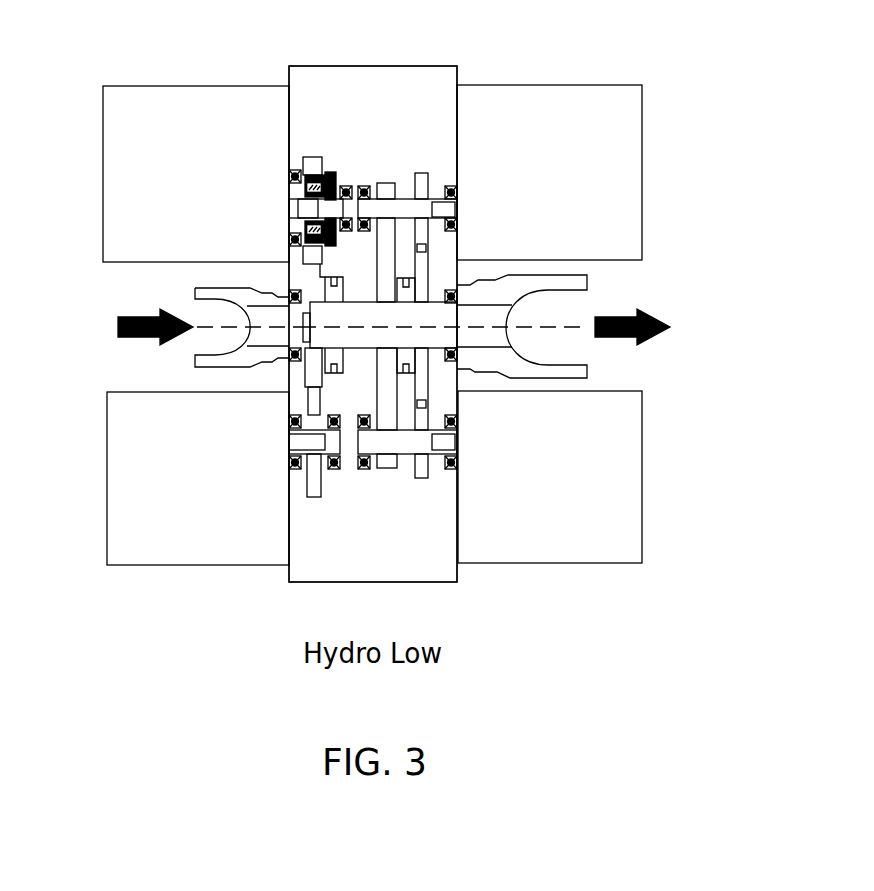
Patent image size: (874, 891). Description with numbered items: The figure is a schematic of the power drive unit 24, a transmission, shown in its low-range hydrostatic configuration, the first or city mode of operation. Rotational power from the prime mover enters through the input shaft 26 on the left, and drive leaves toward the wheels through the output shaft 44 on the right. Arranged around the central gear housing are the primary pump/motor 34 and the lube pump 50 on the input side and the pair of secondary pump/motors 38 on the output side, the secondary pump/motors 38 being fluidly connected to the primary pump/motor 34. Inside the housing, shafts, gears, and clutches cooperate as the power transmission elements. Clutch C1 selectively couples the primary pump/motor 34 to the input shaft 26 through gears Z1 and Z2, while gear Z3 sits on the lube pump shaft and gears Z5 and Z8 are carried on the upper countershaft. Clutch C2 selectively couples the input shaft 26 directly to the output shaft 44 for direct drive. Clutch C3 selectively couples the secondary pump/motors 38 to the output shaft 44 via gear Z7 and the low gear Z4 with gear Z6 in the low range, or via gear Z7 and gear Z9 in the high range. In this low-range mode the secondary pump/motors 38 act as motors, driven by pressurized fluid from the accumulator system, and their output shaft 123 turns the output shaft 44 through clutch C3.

The power drive unit 24 is at (80, 70).
The input shaft 26 is at (195, 357).
The primary pump/motor 34 is at (185, 86).
The secondary pump/motors 38 is at (580, 85).
The output shaft 44 is at (587, 378).
The lube pump 50 is at (107, 500).
The secondary pump/motors output shaft 123 is at (437, 214).
The gear Z1 is at (305, 383).
The gear Z2 is at (303, 157).
The gear Z3 is at (305, 488).
The low gear Z4 is at (383, 246).
The gear Z5 is at (387, 183).
The gear Z6 is at (387, 470).
The high gear Z7 is at (430, 262).
The gear Z8 is at (428, 173).
The gear Z9 is at (425, 478).
The clutch C1 is at (328, 172).
The clutch C2 is at (325, 283).
The clutch C3 is at (418, 290).